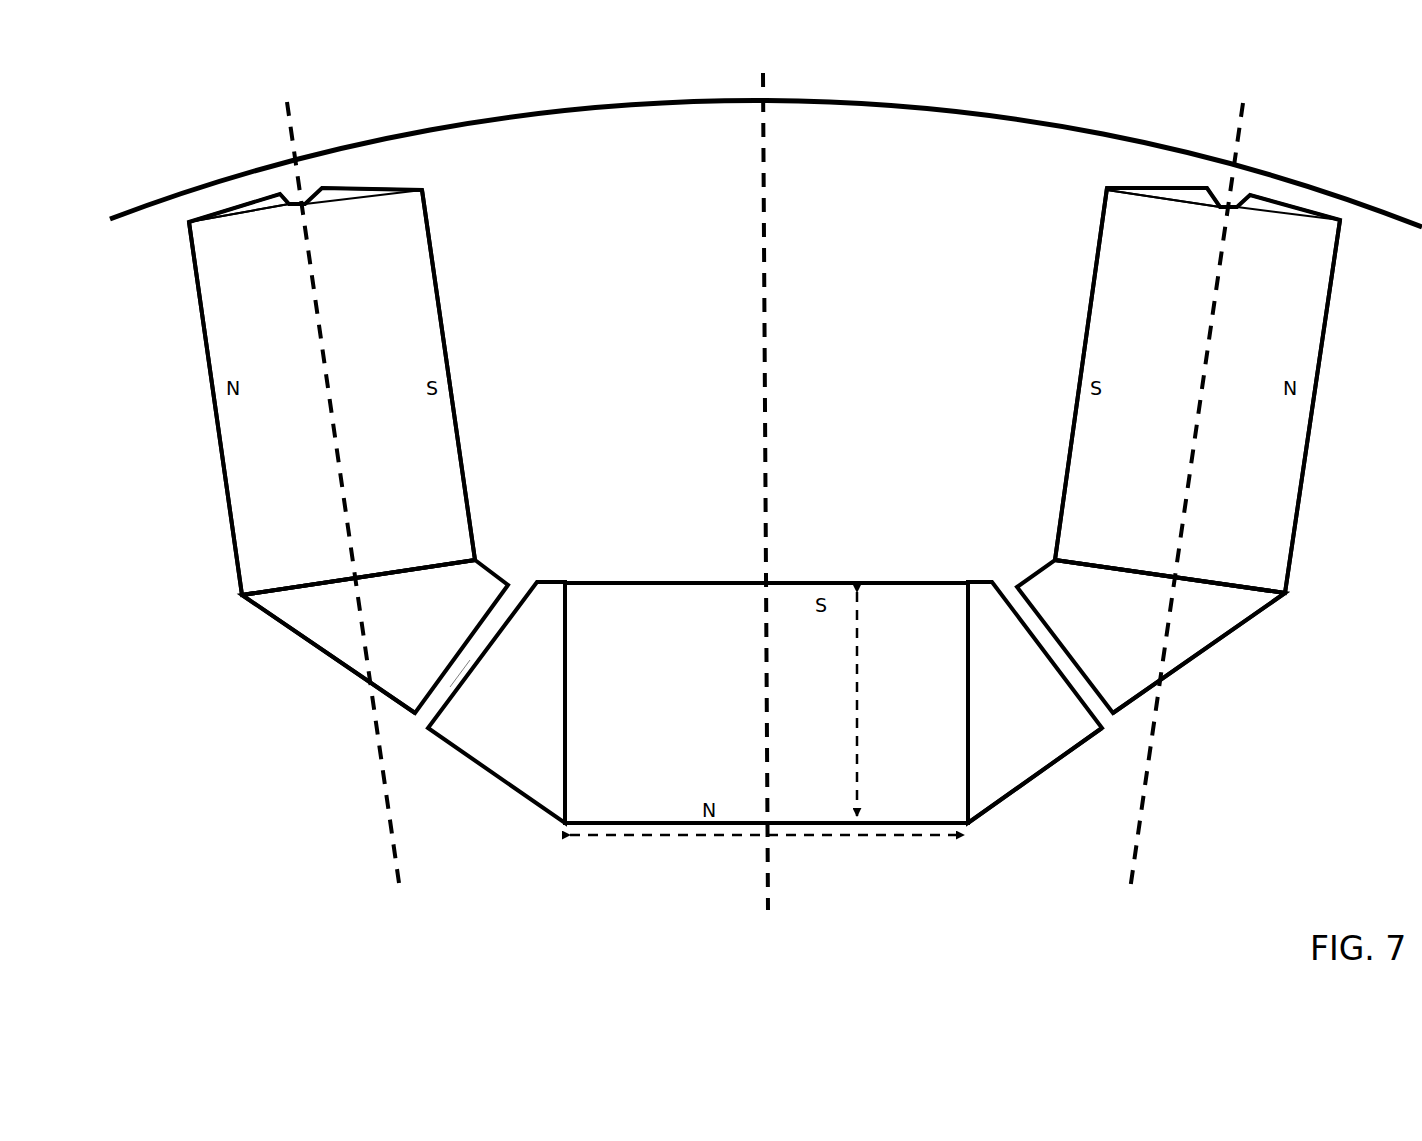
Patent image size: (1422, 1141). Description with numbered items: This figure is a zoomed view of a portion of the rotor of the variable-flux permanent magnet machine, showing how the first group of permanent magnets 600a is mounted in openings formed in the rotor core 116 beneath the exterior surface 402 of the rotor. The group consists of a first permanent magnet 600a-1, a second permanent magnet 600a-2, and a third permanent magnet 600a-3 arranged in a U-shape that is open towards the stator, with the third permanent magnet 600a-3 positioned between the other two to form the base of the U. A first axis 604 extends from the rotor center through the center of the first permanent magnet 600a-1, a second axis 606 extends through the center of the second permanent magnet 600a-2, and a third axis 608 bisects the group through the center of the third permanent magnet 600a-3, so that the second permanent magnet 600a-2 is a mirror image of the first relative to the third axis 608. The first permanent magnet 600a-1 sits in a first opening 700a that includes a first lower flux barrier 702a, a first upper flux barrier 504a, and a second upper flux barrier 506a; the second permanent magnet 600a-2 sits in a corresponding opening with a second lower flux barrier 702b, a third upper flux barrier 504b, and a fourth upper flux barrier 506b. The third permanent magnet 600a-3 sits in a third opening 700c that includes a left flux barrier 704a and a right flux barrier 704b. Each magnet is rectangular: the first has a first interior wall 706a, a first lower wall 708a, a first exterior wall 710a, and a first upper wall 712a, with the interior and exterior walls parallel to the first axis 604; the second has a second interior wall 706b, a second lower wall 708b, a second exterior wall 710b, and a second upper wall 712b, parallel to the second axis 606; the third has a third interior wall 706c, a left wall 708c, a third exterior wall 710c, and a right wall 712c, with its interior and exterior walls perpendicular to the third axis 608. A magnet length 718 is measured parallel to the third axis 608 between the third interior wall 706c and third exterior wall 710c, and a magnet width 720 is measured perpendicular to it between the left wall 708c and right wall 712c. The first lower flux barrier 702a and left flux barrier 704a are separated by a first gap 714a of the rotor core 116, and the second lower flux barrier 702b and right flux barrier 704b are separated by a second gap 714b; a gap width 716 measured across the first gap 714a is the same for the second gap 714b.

The rotor core 116 is at (634, 316).
The exterior surface 402 is at (523, 115).
The first upper flux barrier 504a is at (268, 203).
The third upper flux barrier 504b is at (1183, 193).
The second upper flux barrier 506a is at (340, 187).
The fourth upper flux barrier 506b is at (1270, 207).
The first group of permanent magnets 600a is at (1297, 735).
The first permanent magnet 600a-1 is at (436, 513).
The second permanent magnet 600a-2 is at (1162, 513).
The third permanent magnet 600a-3 is at (686, 678).
The first axis 604 is at (283, 103).
The second axis 606 is at (1245, 113).
The third axis 608 is at (768, 82).
The first opening 700a is at (310, 650).
The third opening 700c is at (1032, 777).
The first lower flux barrier 702a is at (452, 621).
The second lower flux barrier 702b is at (1107, 608).
The left flux barrier 704a is at (530, 733).
The right flux barrier 704b is at (1055, 744).
The first interior wall 706a is at (428, 272).
The second interior wall 706b is at (1090, 342).
The third interior wall 706c is at (725, 587).
The first lower wall 708a is at (312, 580).
The second lower wall 708b is at (1250, 583).
The left wall 708c is at (567, 712).
The first exterior wall 710a is at (227, 442).
The second exterior wall 710b is at (1330, 273).
The third exterior wall 710c is at (672, 822).
The first upper wall 712a is at (243, 220).
The second upper wall 712b is at (1150, 200).
The right wall 712c is at (967, 648).
The first gap 714a is at (500, 620).
The second gap 714b is at (1033, 623).
The gap width 716 is at (443, 697).
The magnet length 718 is at (855, 695).
The magnet width 720 is at (660, 838).